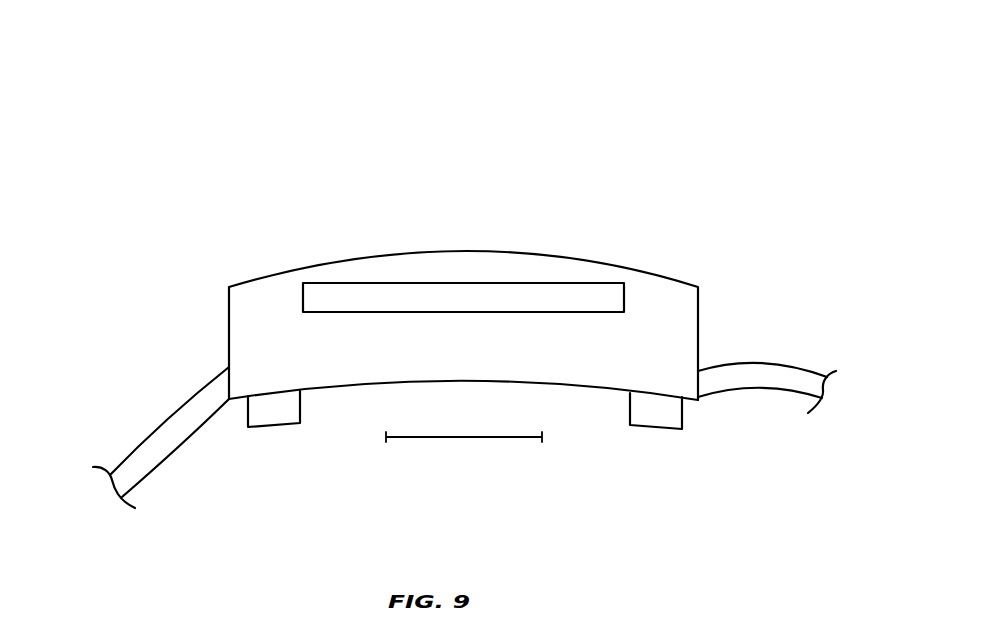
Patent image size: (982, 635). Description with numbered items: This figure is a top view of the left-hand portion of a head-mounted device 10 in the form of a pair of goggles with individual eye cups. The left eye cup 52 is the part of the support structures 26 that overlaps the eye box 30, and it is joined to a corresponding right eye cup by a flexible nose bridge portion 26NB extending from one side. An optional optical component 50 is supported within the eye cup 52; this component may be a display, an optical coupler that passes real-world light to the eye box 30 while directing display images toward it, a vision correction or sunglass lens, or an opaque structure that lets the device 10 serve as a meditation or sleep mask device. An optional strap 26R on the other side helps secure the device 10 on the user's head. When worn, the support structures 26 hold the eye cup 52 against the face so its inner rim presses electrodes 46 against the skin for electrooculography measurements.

The head-mounted device 10 is at (587, 85).
The support structures 26 is at (436, 388).
The strap 26R is at (162, 433).
The nose bridge portion 26NB is at (762, 371).
The eye box 30 is at (542, 437).
The electrodes 46 is at (276, 428).
The optical component 50 is at (471, 298).
The eye cup 52 is at (342, 373).